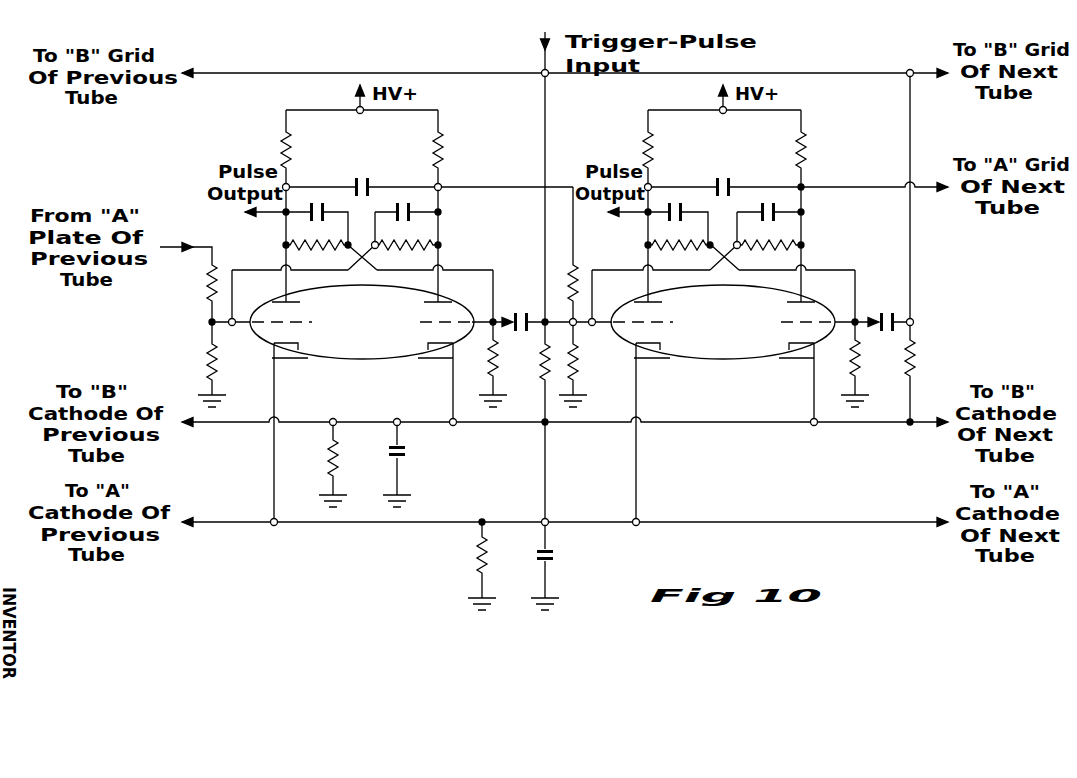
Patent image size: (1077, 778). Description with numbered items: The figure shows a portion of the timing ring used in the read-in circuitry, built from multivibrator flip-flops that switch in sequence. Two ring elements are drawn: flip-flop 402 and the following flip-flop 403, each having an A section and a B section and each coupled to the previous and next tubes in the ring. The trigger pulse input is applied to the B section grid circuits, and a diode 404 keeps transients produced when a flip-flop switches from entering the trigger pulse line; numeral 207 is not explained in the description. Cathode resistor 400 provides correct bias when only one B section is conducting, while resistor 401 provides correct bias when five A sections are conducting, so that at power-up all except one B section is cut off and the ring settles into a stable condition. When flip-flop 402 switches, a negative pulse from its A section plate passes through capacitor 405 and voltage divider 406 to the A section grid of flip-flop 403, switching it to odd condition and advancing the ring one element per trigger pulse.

The trigger pulse input line 207 is at (511, 76).
The cathode resistor 400 is at (314, 464).
The resistor 401 is at (478, 575).
The flip-flop 402 is at (393, 336).
The flip-flop 403 is at (753, 336).
The diode 404 is at (520, 312).
The capacitor 405 is at (357, 182).
The voltage divider 406 is at (576, 378).